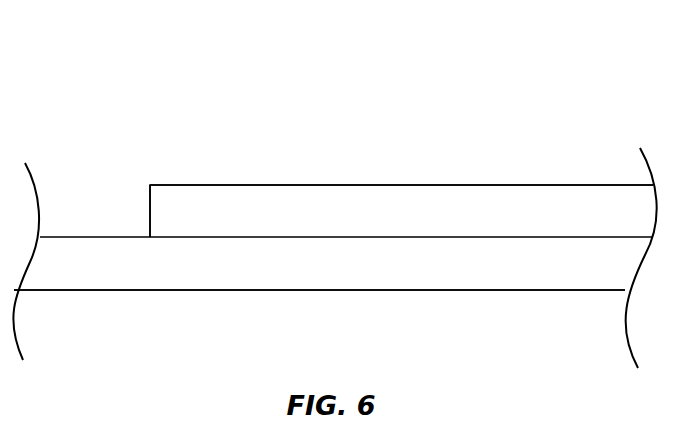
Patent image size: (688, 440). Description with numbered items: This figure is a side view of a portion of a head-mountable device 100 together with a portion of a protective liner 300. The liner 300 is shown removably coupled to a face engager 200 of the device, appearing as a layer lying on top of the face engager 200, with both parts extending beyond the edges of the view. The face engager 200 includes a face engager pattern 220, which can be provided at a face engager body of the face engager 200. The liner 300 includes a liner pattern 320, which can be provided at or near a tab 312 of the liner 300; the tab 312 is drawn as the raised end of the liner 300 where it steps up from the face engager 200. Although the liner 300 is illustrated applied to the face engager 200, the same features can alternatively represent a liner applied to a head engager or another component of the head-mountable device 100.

The electronic device / assembly 100 is at (66, 94).
The face engager 200 is at (380, 272).
The face engager pattern 220 is at (527, 272).
The liner 300 is at (147, 213).
The tab 312 is at (190, 183).
The liner pattern 320 is at (440, 200).